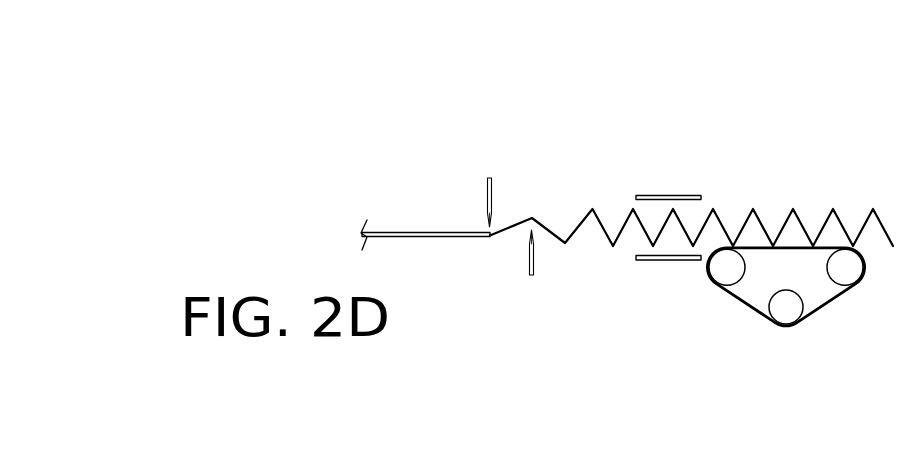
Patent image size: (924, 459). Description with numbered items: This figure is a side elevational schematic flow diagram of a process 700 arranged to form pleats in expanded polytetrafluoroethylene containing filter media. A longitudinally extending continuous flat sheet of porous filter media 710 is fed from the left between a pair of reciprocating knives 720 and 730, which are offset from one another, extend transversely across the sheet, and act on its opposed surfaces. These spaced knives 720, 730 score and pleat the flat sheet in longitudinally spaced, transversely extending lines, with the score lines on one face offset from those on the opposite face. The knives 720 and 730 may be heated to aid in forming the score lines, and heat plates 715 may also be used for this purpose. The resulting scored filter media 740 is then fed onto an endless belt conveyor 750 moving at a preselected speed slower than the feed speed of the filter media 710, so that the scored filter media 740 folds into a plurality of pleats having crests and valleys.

The process 700 is at (468, 88).
The filter media 710 is at (407, 238).
The heat plates 715 is at (670, 195).
The reciprocating knife 720 is at (487, 193).
The reciprocating knife 730 is at (535, 257).
The scored filter media 740 is at (547, 228).
The endless belt conveyor 750 is at (833, 303).